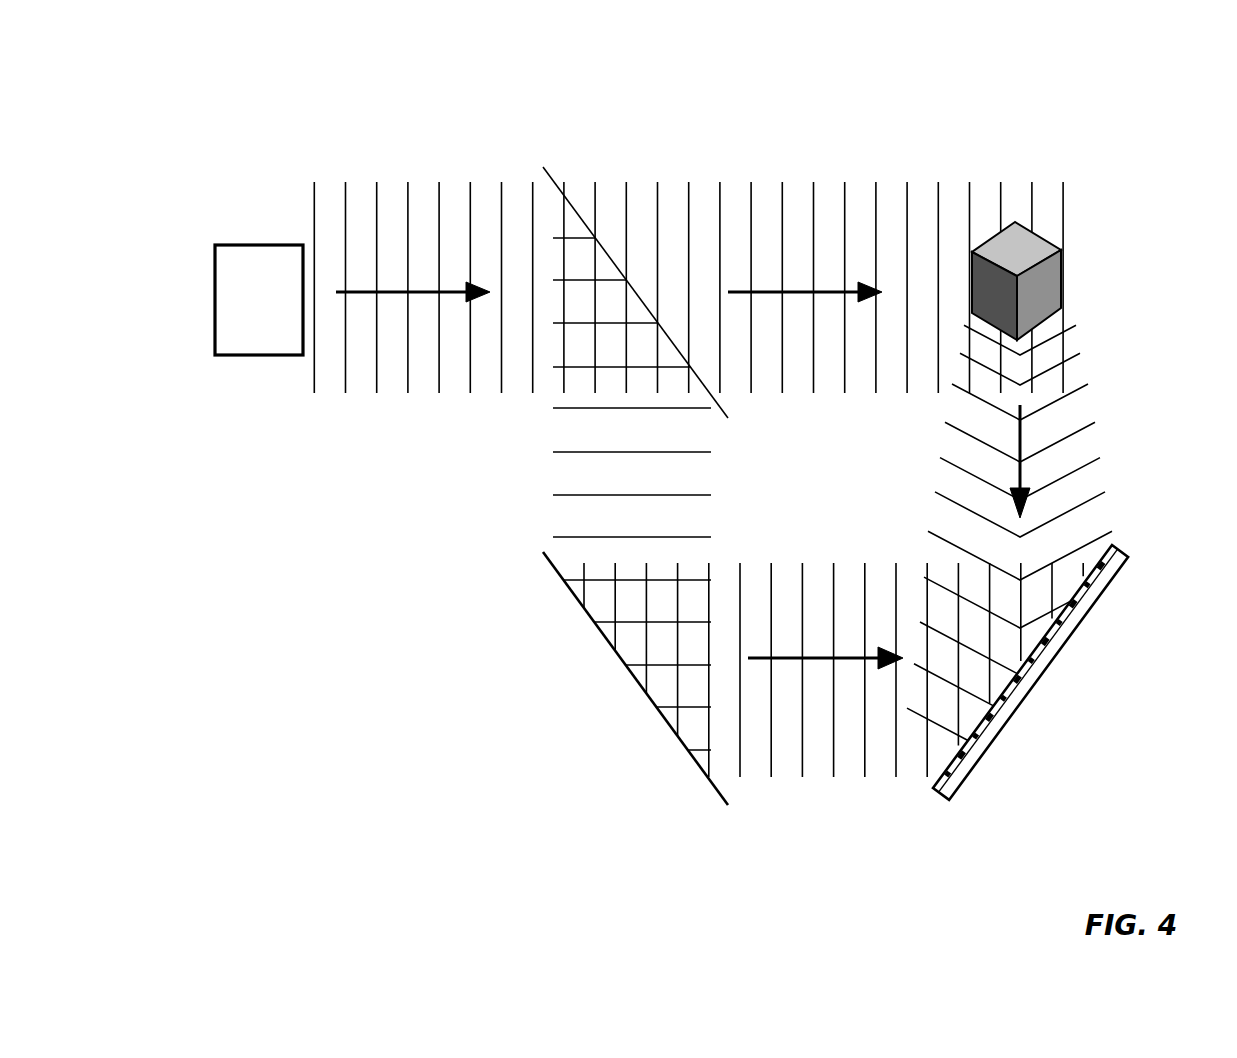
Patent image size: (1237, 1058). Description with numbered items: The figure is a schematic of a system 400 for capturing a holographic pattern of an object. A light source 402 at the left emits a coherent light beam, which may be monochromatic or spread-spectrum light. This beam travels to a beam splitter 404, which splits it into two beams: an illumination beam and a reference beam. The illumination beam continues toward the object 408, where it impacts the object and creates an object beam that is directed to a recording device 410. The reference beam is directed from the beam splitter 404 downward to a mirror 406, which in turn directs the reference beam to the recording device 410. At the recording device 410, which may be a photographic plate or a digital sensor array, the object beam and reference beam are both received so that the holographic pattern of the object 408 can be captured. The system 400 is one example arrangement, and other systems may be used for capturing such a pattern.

The system 400 is at (679, 46).
The light source 402 is at (277, 326).
The beam splitter 404 is at (533, 160).
The mirror 406 is at (702, 784).
The object 408 is at (1050, 287).
The recording device 410 is at (1016, 721).